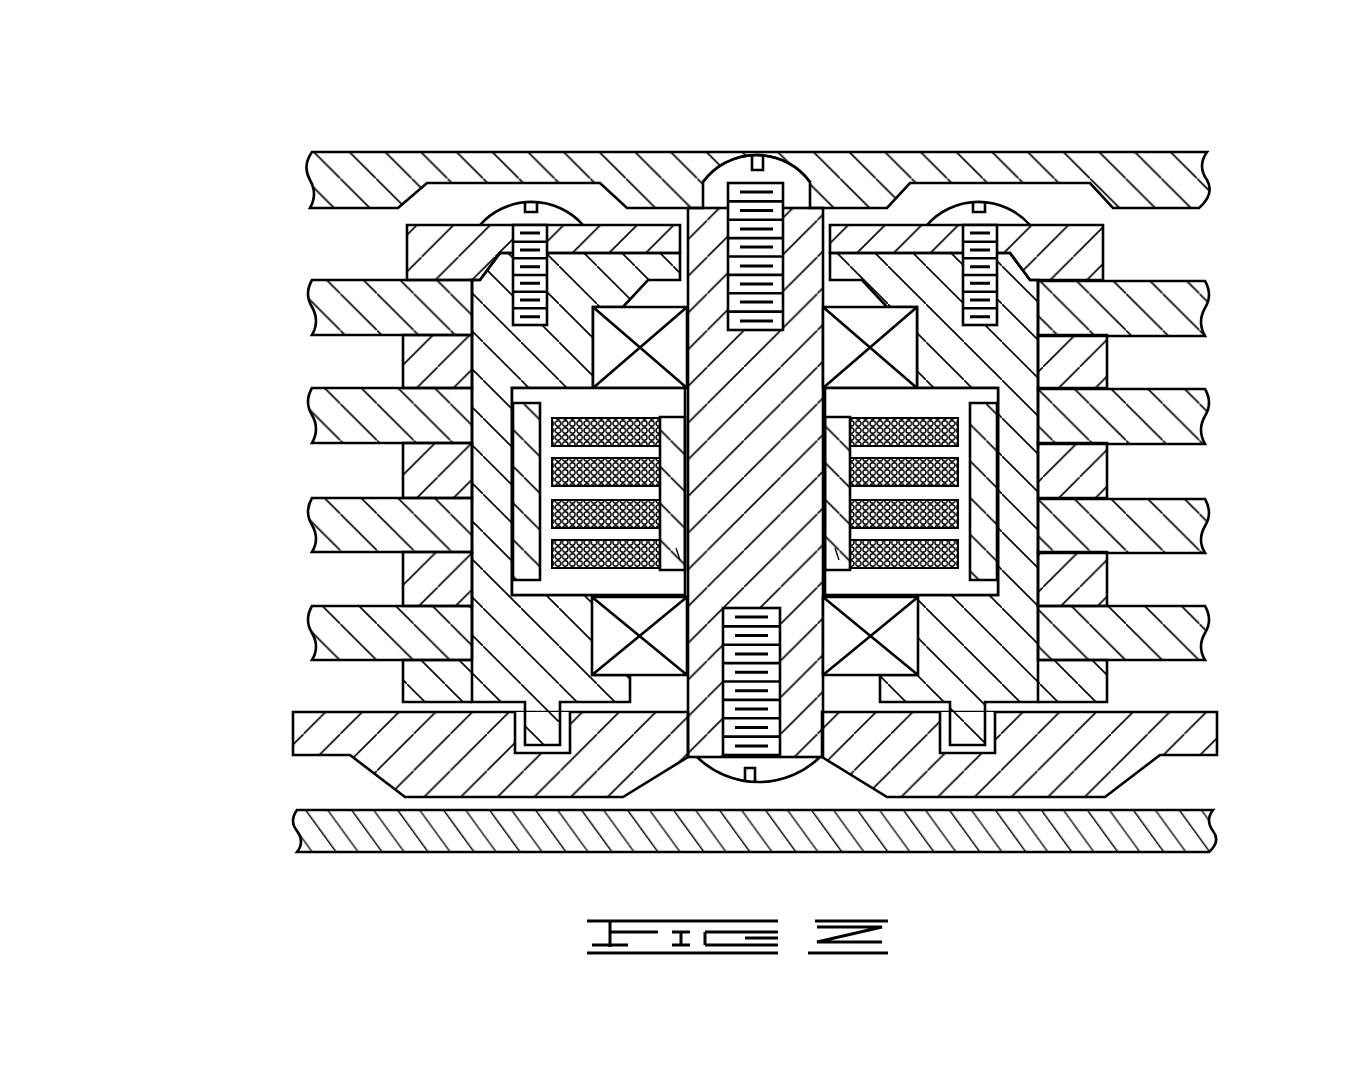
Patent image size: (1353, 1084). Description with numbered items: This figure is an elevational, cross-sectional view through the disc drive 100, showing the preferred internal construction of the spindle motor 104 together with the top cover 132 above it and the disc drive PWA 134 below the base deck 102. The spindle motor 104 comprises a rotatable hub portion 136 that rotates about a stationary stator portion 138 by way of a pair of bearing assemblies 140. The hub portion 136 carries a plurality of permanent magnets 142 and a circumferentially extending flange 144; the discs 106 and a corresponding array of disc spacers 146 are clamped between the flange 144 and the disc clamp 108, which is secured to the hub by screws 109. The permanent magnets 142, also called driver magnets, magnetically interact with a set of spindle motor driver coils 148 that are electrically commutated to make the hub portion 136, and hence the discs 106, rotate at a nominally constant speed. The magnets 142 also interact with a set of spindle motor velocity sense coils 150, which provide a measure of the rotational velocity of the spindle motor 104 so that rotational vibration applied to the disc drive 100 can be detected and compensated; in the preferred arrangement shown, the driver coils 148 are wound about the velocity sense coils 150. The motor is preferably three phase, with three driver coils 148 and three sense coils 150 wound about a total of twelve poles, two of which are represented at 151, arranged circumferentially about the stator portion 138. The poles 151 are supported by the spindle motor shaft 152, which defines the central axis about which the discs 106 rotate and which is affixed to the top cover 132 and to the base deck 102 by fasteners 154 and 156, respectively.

The disc drive 100 is at (730, 501).
The base deck 102 is at (1185, 740).
The spindle motor 104 is at (705, 415).
The discs 106 is at (354, 296).
The disc clamp 108 is at (437, 258).
The screws 109 is at (521, 207).
The top cover 132 is at (587, 163).
The disc drive PWA 134 is at (455, 843).
The hub portion 136 is at (1018, 288).
The stator portion 138 is at (821, 507).
The bearing assemblies 140 is at (898, 348).
The permanent magnets 142 is at (523, 558).
The flange 144 is at (407, 688).
The disc spacers 146 is at (422, 372).
The spindle motor driver coils 148 is at (563, 425).
The spindle motor velocity sense coils 150 is at (563, 477).
The poles 151 is at (678, 548).
The spindle motor shaft 152 is at (800, 688).
The fastener 154 is at (728, 167).
The fastener 156 is at (767, 782).